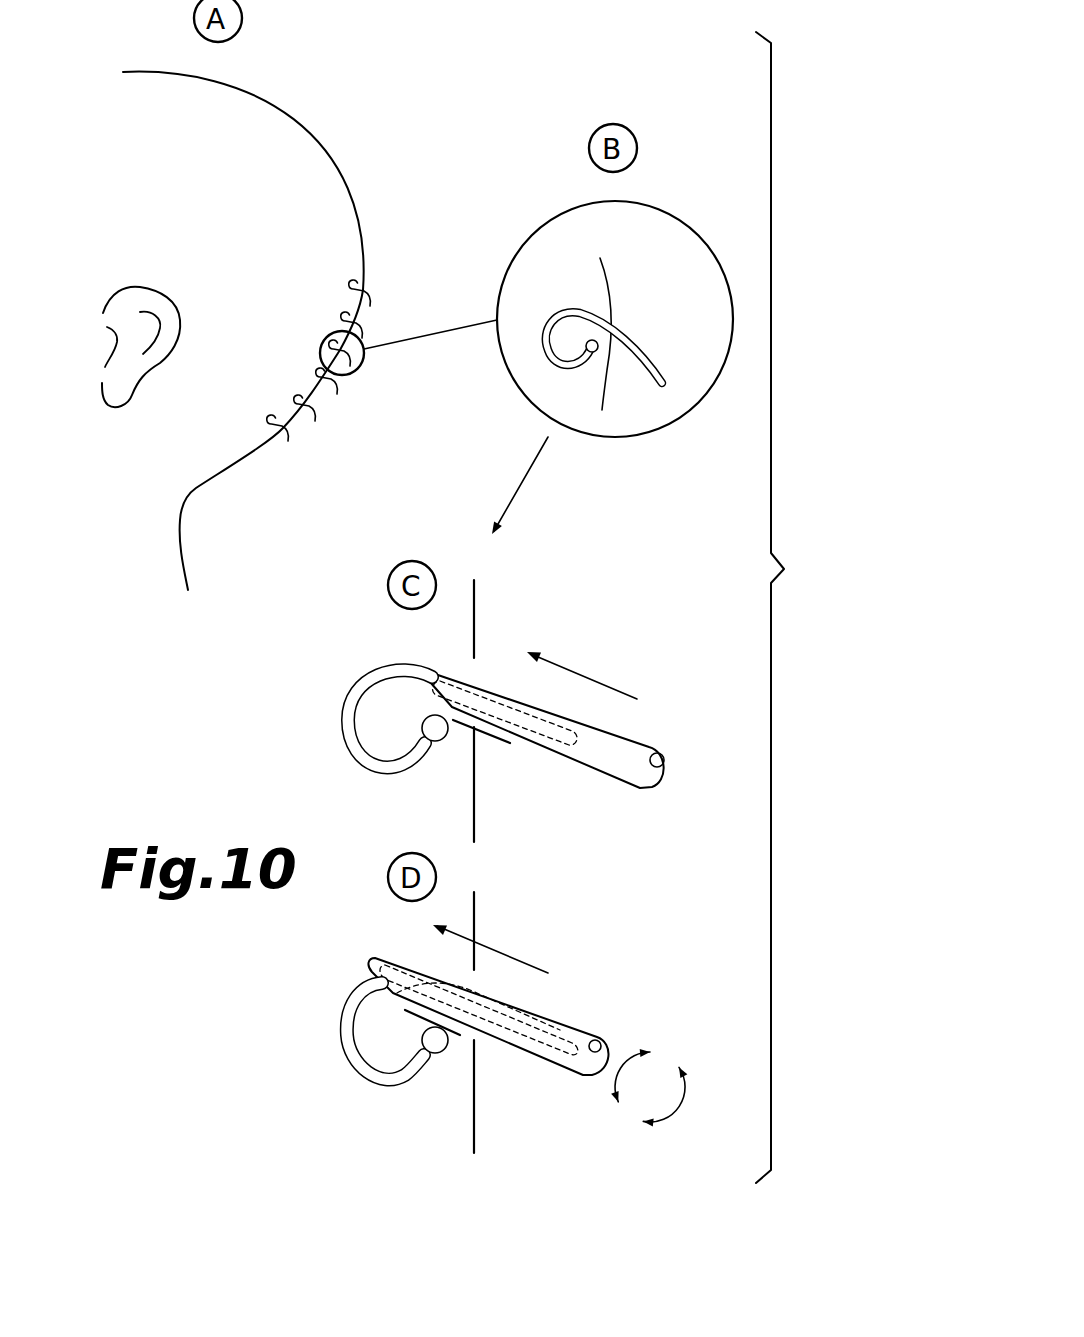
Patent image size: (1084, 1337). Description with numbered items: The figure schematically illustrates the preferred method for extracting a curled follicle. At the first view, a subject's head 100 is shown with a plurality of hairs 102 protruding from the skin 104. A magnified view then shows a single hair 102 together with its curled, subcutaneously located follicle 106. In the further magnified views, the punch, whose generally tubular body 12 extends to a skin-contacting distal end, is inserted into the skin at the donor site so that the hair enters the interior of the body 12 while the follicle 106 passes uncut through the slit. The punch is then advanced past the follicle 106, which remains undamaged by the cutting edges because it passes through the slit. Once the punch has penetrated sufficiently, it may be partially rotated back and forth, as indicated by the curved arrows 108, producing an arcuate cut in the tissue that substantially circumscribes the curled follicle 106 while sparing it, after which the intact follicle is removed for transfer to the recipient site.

The tubular body 12 is at (622, 750).
The head 100 is at (331, 155).
The hair 102 is at (366, 292).
The skin 104 is at (355, 207).
The follicle 106 is at (560, 318).
The rotation of tool 108 is at (615, 1085).